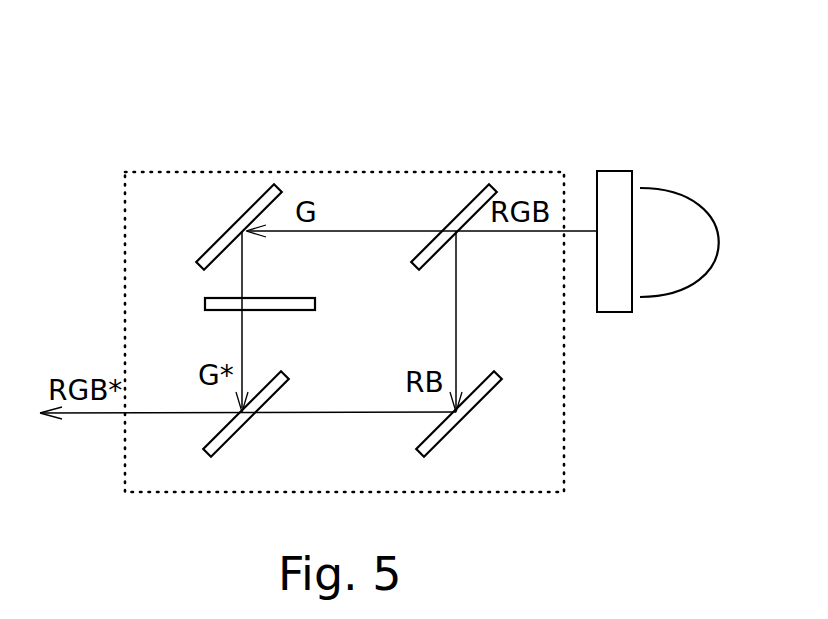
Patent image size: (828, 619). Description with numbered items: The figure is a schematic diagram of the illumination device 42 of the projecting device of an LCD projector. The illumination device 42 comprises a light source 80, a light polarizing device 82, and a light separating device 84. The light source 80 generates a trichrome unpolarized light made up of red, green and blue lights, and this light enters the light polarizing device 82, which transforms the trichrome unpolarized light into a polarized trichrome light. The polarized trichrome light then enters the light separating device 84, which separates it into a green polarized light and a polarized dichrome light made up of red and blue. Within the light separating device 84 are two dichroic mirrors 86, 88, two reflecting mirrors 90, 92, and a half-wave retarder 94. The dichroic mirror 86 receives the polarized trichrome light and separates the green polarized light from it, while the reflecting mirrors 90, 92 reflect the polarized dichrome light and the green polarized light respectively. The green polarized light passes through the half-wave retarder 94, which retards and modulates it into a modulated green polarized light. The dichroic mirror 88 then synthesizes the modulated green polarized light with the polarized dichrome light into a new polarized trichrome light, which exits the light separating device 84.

The illumination device 42 is at (150, 106).
The light source 80 is at (673, 188).
The light polarizing device 82 is at (612, 171).
The light separating device 84 is at (563, 458).
The dichroic mirror 86 is at (462, 210).
The dichroic mirror 88 is at (228, 445).
The reflecting mirror 90 is at (440, 448).
The reflecting mirror 92 is at (222, 234).
The half-wave retarder 94 is at (206, 300).